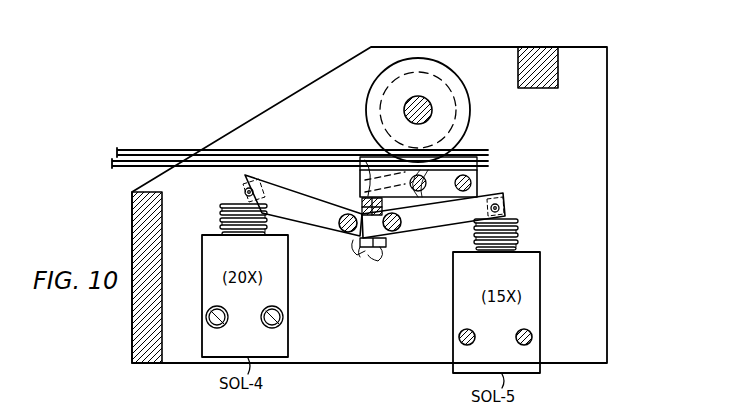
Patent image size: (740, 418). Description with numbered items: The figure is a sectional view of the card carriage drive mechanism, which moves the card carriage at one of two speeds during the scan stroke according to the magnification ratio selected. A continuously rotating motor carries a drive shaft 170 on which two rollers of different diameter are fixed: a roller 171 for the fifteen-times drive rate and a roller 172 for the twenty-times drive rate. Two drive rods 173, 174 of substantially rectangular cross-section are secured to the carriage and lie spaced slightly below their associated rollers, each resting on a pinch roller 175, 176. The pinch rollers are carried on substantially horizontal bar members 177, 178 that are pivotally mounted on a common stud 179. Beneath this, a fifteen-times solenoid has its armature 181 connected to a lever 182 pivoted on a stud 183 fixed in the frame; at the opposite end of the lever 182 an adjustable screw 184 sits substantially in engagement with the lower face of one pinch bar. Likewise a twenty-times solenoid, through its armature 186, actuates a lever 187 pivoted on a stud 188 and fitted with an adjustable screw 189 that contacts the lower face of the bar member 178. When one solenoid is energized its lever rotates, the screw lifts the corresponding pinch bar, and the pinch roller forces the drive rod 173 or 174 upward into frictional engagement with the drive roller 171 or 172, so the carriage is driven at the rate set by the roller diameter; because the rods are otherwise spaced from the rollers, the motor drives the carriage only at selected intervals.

The drive shaft 170 is at (432, 104).
The roller 171 is at (438, 66).
The roller 172 is at (413, 72).
The drive rod 173 is at (488, 163).
The drive rod 174 is at (488, 150).
The pinch roller 175 is at (360, 158).
The pinch roller 176 is at (370, 176).
The bar member 177 is at (362, 191).
The bar member 178 is at (362, 176).
The stud 179 is at (477, 183).
The armature 181 is at (503, 207).
The lever 182 is at (450, 217).
The stud 183 is at (396, 232).
The adjustable screw 184 is at (382, 250).
The armature 186 is at (242, 192).
The lever 187 is at (305, 217).
The stud 188 is at (348, 232).
The adjustable screw 189 is at (355, 255).